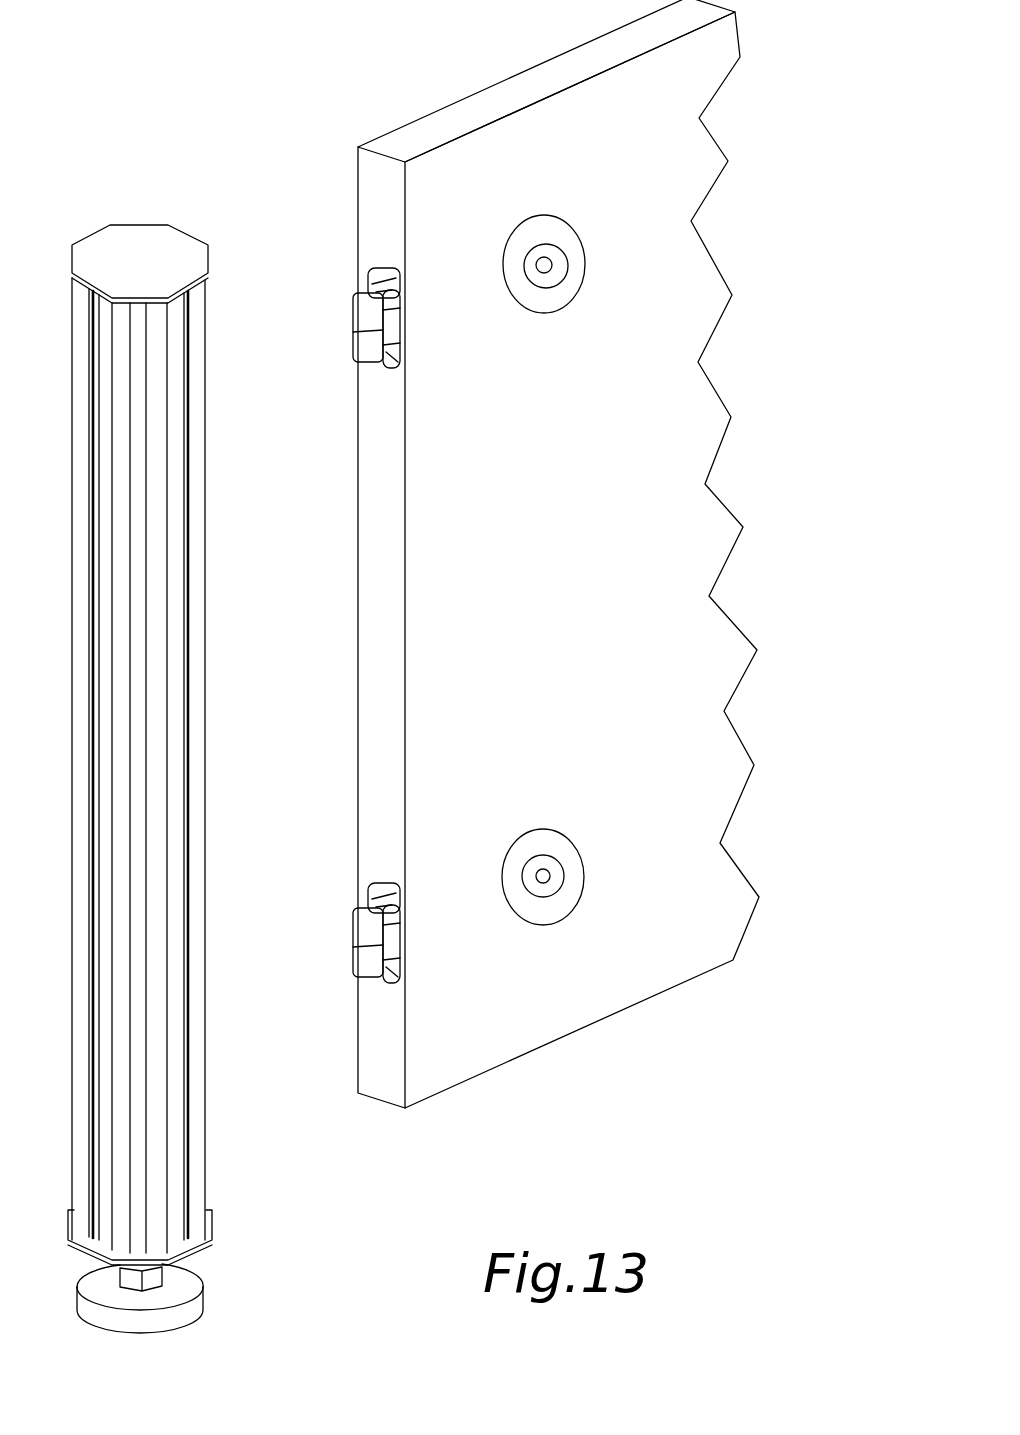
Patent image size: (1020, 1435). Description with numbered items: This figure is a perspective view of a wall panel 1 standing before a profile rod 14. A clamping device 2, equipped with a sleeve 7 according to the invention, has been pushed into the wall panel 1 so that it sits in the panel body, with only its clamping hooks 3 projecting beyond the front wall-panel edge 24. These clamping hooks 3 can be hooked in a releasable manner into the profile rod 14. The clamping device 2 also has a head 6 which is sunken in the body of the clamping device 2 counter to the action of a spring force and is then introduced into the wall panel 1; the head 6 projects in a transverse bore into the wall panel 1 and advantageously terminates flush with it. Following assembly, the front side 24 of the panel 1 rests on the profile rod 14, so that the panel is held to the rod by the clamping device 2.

The wall panel 1 is at (460, 123).
The clamping device 2 is at (370, 270).
The clamping hooks 3 is at (353, 317).
The head 6 is at (556, 268).
The sleeve 7 is at (552, 297).
The profile rod 14 is at (185, 723).
The front wall-panel edge 24 is at (378, 553).